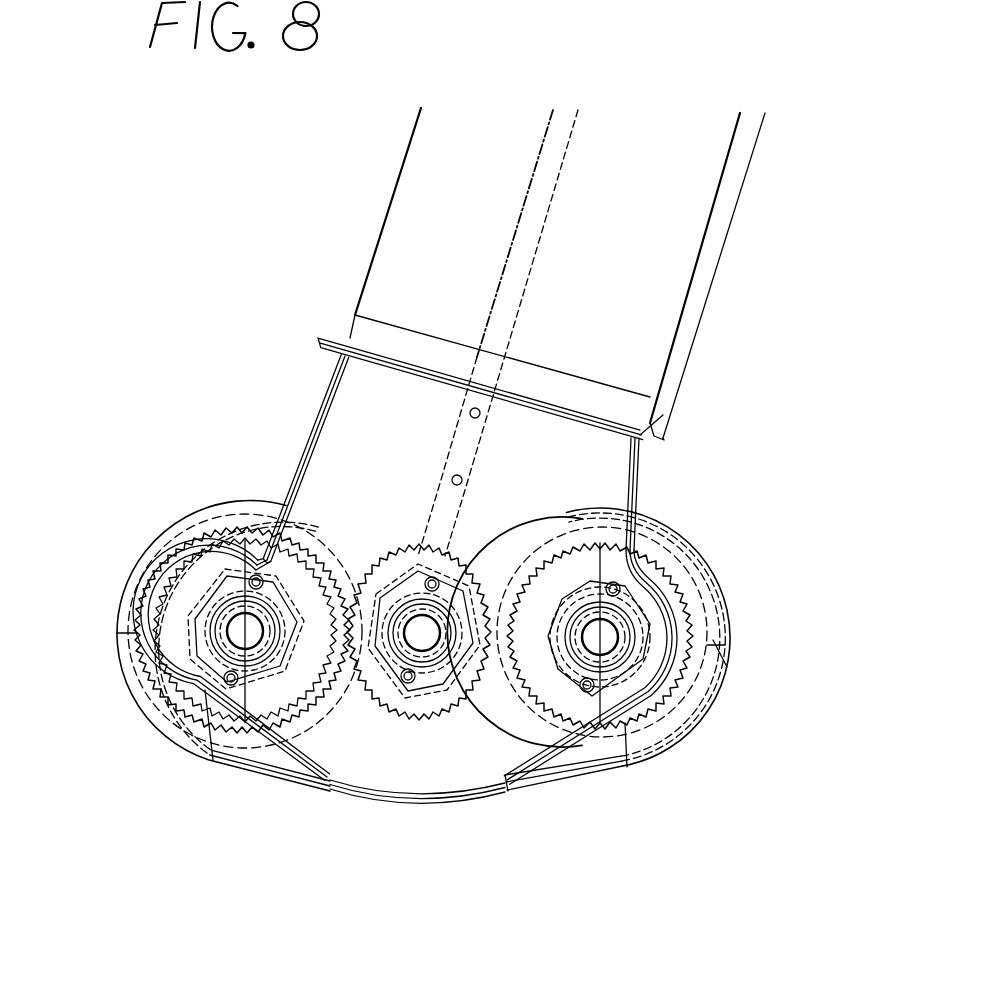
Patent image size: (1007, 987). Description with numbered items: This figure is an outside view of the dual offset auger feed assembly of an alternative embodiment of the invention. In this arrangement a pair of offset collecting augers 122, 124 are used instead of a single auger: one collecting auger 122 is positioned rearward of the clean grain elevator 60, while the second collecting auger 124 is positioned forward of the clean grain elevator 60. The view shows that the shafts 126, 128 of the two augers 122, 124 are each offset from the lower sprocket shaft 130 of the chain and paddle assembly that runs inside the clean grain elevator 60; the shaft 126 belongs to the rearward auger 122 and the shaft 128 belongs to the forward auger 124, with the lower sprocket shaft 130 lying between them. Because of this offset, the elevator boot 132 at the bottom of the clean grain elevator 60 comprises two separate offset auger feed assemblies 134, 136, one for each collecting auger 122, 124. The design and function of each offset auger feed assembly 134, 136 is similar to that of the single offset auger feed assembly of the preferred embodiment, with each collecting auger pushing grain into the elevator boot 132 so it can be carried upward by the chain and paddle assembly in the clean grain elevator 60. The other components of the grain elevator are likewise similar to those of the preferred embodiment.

The clean grain elevator 60 is at (683, 275).
The collecting auger 122 is at (233, 633).
The collecting auger 124 is at (615, 645).
The shaft 126 is at (233, 617).
The shaft 128 is at (618, 637).
The lower sprocket shaft 130 is at (413, 650).
The elevator boot 132 is at (557, 787).
The offset auger feed assembly 134 is at (198, 776).
The offset auger feed assembly 136 is at (706, 756).